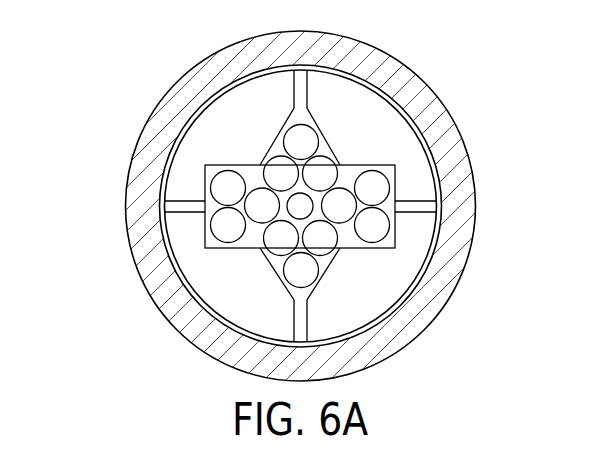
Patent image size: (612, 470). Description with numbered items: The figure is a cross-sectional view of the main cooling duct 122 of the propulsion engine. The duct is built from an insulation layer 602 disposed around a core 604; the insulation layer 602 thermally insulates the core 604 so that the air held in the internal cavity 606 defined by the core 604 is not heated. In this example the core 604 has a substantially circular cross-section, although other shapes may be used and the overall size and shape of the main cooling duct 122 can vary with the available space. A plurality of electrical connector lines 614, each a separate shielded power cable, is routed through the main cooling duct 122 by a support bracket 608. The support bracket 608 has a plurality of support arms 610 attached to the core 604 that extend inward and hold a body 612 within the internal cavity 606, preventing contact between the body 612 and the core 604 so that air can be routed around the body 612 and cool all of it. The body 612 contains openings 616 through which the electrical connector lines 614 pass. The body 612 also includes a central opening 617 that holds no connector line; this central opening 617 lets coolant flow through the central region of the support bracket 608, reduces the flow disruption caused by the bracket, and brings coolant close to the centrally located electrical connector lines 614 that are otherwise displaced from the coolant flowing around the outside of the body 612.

The main cooling duct 122 is at (289, 199).
The insulation layer 602 is at (148, 99).
The core 604 is at (424, 138).
The internal cavity 606 is at (388, 297).
The support bracket 608 is at (251, 206).
The support arms 610 is at (300, 322).
The body 612 is at (300, 191).
The electrical connector lines 614 is at (325, 170).
The openings 616 is at (203, 178).
The central opening 617 is at (292, 216).